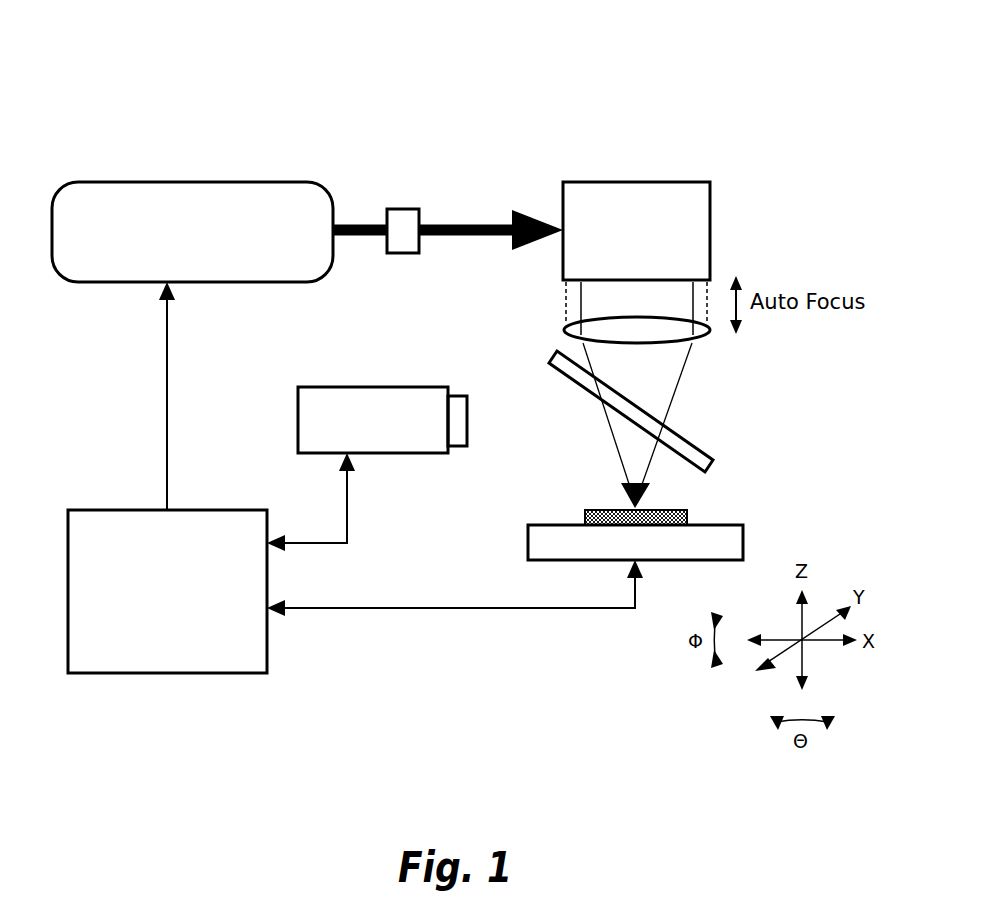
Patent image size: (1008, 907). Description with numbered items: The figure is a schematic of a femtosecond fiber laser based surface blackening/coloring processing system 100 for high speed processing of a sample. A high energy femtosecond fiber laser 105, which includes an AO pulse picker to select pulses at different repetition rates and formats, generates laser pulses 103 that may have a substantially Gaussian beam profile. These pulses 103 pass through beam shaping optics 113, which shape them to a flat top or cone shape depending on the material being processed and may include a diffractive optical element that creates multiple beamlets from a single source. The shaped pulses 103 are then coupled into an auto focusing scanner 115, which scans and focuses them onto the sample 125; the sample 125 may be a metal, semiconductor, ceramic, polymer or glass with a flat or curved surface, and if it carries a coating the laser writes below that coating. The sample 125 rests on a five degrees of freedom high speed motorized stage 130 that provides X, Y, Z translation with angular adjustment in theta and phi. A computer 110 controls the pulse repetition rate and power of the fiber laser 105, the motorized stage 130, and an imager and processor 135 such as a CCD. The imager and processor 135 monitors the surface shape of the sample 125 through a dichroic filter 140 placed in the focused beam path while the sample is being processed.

The surface blackening/coloring processing system 100 is at (556, 88).
The laser pulses 103 is at (357, 217).
The high energy femtosecond fiber laser 105 is at (192, 232).
The computer 110 is at (167, 591).
The beam shaping optics 113 is at (398, 222).
The auto focusing scanner 115 is at (636, 345).
The sample 125 is at (683, 505).
The motorized stage 130 is at (635, 542).
The imager and processor 135 is at (382, 420).
The dichroic filter 140 is at (672, 440).